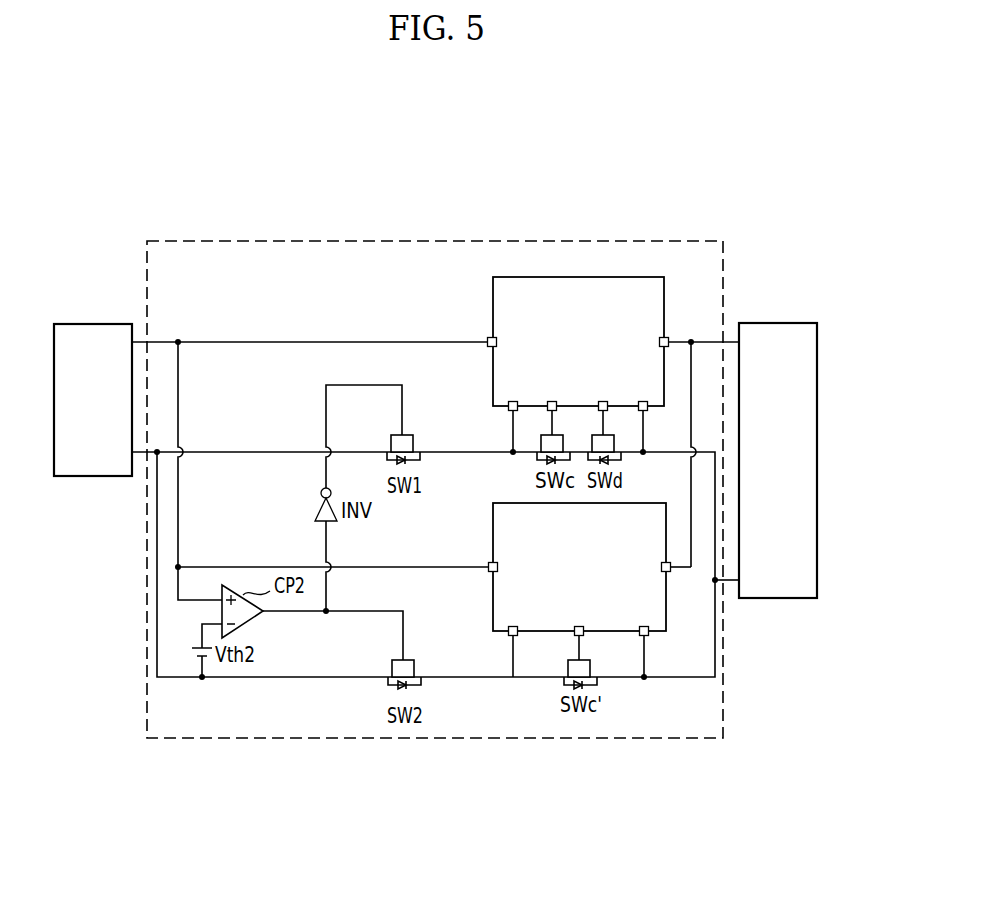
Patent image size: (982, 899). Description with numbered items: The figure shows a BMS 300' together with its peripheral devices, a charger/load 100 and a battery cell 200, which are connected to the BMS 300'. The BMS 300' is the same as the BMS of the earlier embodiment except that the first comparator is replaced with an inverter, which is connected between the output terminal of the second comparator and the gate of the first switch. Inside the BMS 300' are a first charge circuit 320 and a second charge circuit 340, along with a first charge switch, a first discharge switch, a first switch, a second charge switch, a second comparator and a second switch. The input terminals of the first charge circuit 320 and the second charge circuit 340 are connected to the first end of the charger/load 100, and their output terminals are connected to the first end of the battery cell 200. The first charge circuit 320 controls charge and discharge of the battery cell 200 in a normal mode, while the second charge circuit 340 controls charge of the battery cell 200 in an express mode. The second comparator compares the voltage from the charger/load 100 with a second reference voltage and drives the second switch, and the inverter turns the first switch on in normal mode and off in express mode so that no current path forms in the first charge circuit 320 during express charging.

The charger/load 100 is at (103, 324).
The battery cell 200 is at (787, 323).
The BMS 300' is at (435, 464).
The first charge circuit 320 is at (493, 298).
The second charge circuit 340 is at (493, 526).